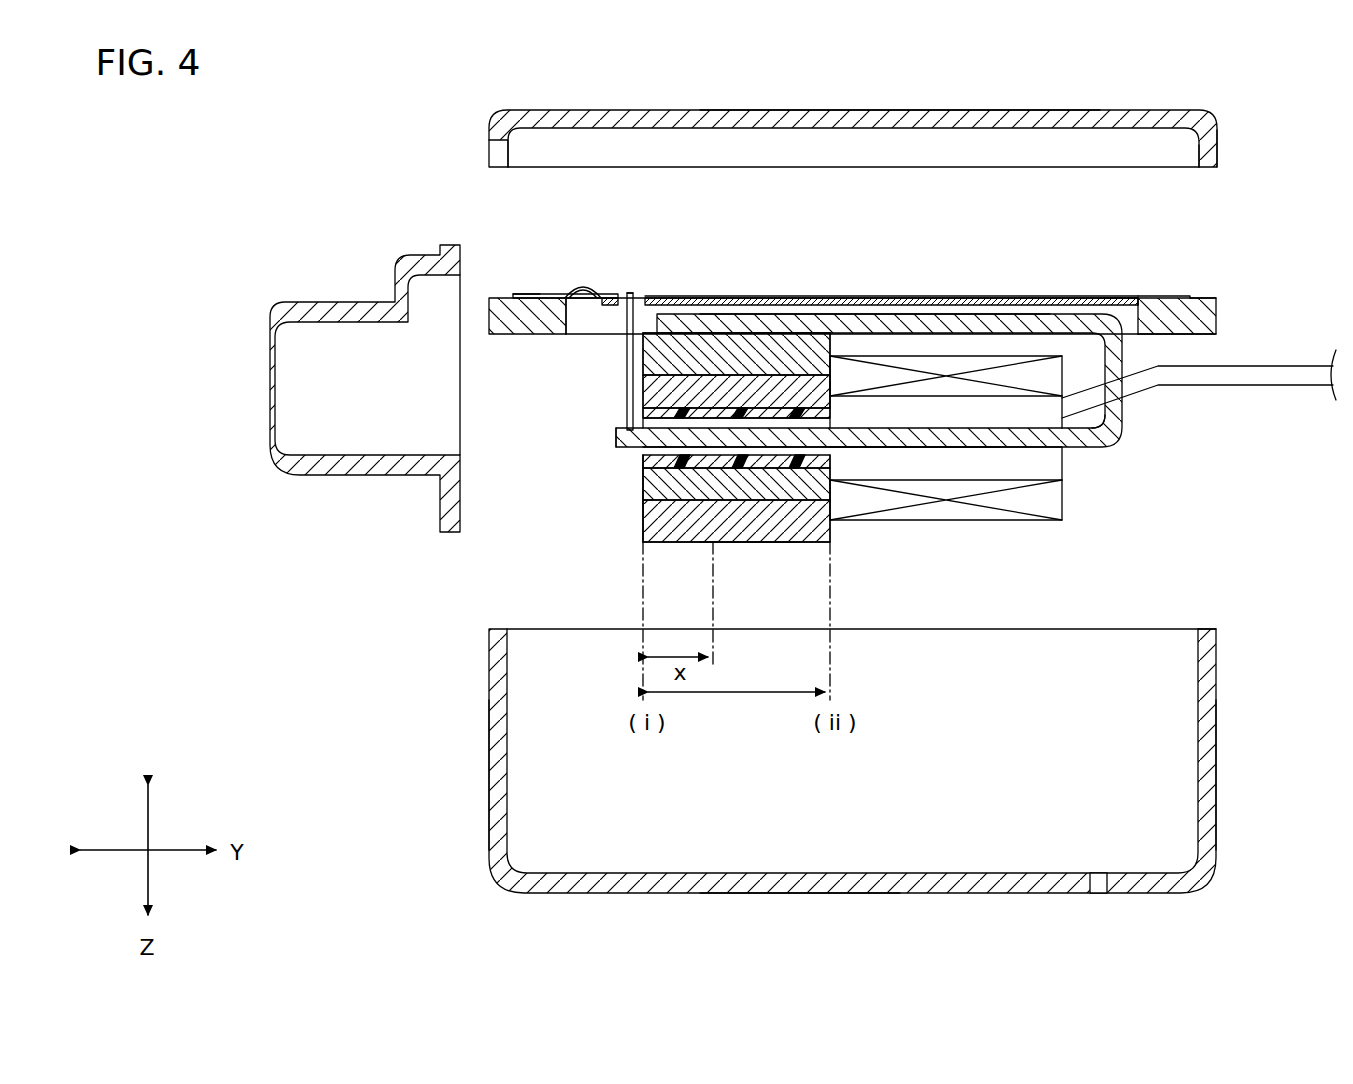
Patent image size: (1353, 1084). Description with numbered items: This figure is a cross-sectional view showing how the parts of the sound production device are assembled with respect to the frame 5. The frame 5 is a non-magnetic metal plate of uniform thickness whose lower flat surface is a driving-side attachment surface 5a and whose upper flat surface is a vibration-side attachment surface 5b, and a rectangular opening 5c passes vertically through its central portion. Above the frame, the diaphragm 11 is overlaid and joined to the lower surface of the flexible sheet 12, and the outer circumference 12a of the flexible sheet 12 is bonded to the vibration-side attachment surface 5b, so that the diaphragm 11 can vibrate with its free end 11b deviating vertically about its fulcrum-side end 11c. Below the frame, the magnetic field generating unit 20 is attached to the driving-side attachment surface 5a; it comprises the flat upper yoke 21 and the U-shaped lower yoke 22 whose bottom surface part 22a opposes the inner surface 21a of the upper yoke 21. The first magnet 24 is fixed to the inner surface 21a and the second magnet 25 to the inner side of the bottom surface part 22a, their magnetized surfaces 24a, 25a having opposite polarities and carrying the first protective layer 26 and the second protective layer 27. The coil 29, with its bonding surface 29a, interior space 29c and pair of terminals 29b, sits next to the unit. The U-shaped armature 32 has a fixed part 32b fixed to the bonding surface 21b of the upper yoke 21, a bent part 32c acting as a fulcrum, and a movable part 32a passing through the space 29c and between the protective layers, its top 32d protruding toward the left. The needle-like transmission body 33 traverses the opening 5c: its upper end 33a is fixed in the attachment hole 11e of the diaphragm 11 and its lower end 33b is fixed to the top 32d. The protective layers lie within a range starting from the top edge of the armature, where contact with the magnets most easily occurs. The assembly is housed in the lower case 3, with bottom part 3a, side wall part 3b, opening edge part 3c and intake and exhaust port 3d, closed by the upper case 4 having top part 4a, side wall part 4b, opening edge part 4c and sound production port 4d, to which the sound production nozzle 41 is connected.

The lower case 3 is at (1220, 880).
The bottom part 3a is at (805, 885).
The side wall part 3b is at (495, 795).
The opening edge part 3c is at (1210, 632).
The intake and exhaust port 3d is at (1098, 882).
The upper case 4 is at (1122, 104).
The top part 4a is at (935, 112).
The side wall part 4b is at (1214, 158).
The opening edge part 4c is at (1205, 168).
The sound production port 4d is at (490, 152).
The frame 5 is at (1190, 318).
The driving-side attachment surface 5a is at (1185, 336).
The vibration-side attachment surface 5b is at (1210, 300).
The opening 5c is at (598, 340).
The diaphragm 11 is at (1040, 300).
The free end 11b is at (604, 296).
The fulcrum-side end 11c is at (1125, 300).
The attachment hole 11e is at (648, 296).
The flexible sheet 12 is at (588, 294).
The outer circumference 12a is at (543, 294).
The magnetic field generating unit 20 is at (840, 550).
The upper yoke 21 is at (795, 348).
The inner surface 21a is at (838, 362).
The bonding surface 21b is at (782, 340).
The lower yoke 22 is at (782, 543).
The bottom surface part 22a is at (752, 540).
The first magnet 24 is at (710, 390).
The magnetized surface 24a is at (815, 402).
The second magnet 25 is at (692, 480).
The magnetized surface 25a is at (833, 490).
The first protective layer 26 is at (749, 428).
The second protective layer 27 is at (644, 495).
The coil 29 is at (1030, 500).
The bonding surface 29a is at (836, 560).
The terminals 29b is at (1295, 388).
The space 29c is at (978, 465).
The armature 32 is at (1081, 452).
The movable part 32a is at (652, 458).
The fixed part 32b is at (988, 325).
The bent part 32c is at (1112, 440).
The top 32d is at (650, 449).
The transmission body 33 is at (628, 395).
The upper end 33a is at (633, 293).
The lower end 33b is at (616, 435).
The sound production nozzle 41 is at (342, 445).